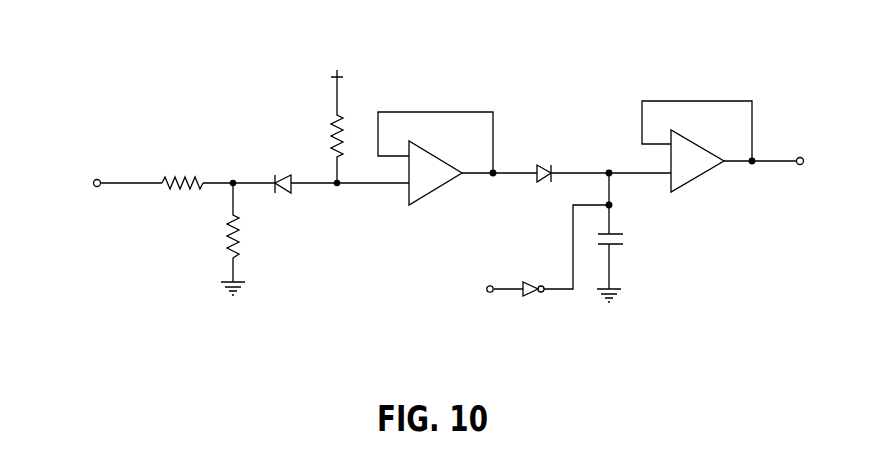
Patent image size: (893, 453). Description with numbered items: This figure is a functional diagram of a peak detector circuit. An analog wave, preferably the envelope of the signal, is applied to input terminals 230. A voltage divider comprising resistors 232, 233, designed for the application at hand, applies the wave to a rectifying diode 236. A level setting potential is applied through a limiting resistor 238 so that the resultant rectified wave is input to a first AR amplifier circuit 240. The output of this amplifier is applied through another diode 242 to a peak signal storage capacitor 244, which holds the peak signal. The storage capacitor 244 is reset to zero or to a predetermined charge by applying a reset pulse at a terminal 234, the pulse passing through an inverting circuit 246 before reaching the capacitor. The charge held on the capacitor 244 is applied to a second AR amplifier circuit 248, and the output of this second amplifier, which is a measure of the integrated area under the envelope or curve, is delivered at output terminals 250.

The input terminals 230 is at (94, 183).
The resistor 232 is at (178, 177).
The resistor 233 is at (230, 227).
The terminal 234 is at (490, 293).
The rectifying diode 236 is at (282, 193).
The limiting resistor 238 is at (333, 128).
The AR amplifier circuit 240 is at (432, 191).
The diode 242 is at (539, 165).
The peak signal storage capacitor 244 is at (625, 242).
The inverting circuit 246 is at (527, 282).
The AR amplifier circuit 248 is at (700, 178).
The output terminals 250 is at (804, 161).